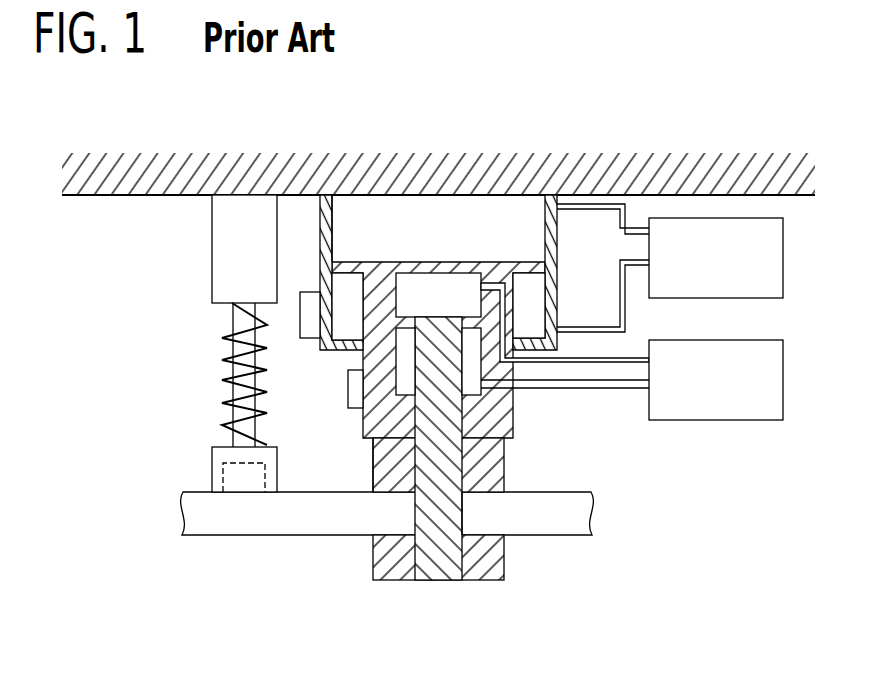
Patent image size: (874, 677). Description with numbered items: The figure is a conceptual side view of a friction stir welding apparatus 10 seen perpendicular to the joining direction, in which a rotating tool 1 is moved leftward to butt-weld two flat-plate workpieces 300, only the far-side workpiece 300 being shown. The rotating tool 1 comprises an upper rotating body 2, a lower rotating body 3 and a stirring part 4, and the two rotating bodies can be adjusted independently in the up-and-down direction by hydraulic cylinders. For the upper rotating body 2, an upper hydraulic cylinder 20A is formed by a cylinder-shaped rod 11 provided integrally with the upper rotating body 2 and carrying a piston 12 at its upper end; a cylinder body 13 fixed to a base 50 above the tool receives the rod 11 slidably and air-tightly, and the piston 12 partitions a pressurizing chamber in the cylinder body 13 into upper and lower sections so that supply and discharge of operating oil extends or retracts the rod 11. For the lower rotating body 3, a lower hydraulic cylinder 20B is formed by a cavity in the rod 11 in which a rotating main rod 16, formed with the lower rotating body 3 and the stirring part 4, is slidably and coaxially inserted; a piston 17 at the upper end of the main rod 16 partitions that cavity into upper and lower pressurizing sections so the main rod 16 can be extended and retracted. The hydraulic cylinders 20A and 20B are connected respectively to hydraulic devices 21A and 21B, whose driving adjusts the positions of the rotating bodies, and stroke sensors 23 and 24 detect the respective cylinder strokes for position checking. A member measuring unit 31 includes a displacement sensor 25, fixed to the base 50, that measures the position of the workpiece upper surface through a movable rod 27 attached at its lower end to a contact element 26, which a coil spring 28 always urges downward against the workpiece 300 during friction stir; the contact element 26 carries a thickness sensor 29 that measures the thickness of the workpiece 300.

The rotating tool 1 is at (429, 481).
The upper rotating body 2 is at (490, 475).
The lower rotating body 3 is at (480, 566).
The stirring part 4 is at (462, 513).
The friction stir welding apparatus 10 is at (553, 141).
The cylinder-shaped rod 11 is at (497, 425).
The piston 12 is at (528, 274).
The cylinder body 13 is at (320, 216).
The rotating main rod 16 is at (375, 453).
The piston 17 is at (402, 330).
The upper hydraulic cylinder 20A is at (314, 247).
The lower hydraulic cylinder 20B is at (525, 398).
The hydraulic device 21A is at (698, 287).
The hydraulic device 21B is at (697, 410).
The stroke sensor 23 is at (309, 321).
The stroke sensor 24 is at (350, 392).
The displacement sensor 25 is at (216, 284).
The contact element 26 is at (215, 455).
The movable rod 27 is at (235, 368).
The coil spring 28 is at (232, 334).
The thickness sensor 29 is at (225, 478).
The biasing unit 31 is at (178, 343).
The base 50 is at (176, 196).
The workpiece 300 is at (307, 523).